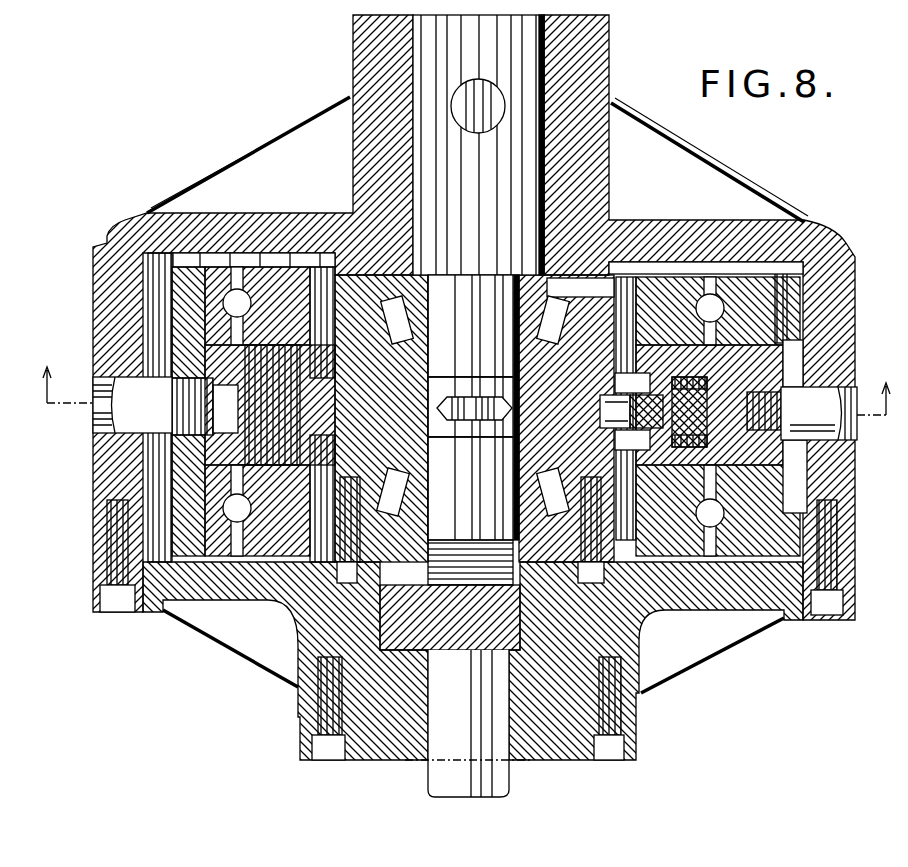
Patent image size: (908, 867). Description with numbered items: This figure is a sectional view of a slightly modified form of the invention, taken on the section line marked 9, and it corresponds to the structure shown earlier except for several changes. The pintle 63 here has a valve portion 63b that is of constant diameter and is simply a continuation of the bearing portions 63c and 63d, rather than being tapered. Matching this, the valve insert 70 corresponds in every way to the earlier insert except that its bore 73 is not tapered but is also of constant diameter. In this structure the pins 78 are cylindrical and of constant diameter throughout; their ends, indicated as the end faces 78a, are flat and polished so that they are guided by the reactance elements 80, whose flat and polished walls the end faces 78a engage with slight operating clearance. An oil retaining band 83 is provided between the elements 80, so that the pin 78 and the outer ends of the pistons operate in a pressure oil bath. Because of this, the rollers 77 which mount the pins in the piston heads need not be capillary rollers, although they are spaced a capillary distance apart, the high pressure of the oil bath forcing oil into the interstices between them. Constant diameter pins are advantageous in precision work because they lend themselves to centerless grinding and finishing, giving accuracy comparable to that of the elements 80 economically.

The section line 9- 9 is at (465, 381).
The pintle 63 is at (462, 406).
The valve portion 63b is at (448, 427).
The bearing portion 63c is at (492, 343).
The bearing portion 63d is at (470, 505).
The valve insert 70 is at (510, 355).
The bore 73 is at (508, 453).
The rollers 77 is at (744, 383).
The pins 78 is at (689, 412).
The end faces of the pins 78a is at (689, 412).
The reactance elements 80 is at (646, 347).
The oil retaining band 83 is at (778, 453).